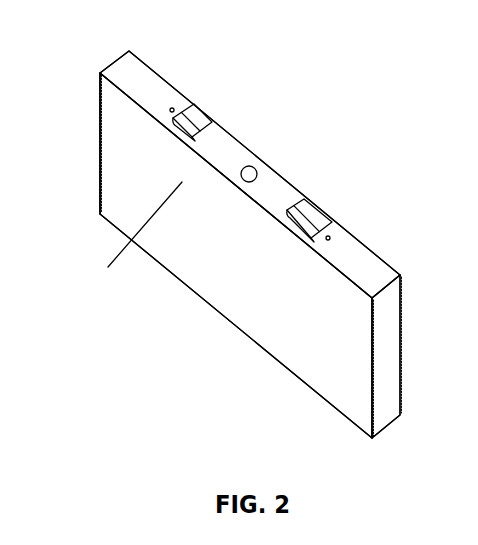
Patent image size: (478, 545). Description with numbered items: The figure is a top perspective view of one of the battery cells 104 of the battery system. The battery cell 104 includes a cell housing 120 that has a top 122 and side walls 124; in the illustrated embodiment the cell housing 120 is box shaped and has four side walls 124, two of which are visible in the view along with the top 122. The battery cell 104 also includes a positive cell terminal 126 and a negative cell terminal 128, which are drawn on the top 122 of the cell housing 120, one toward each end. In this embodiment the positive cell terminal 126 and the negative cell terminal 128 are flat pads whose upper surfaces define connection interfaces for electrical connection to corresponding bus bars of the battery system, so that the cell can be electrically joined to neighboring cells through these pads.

The battery cell 104 is at (316, 88).
The cell housing 120 is at (273, 274).
The top 122 is at (140, 72).
The side walls 124 is at (108, 166).
The positive cell terminal 126 is at (203, 120).
The negative cell terminal 128 is at (318, 210).